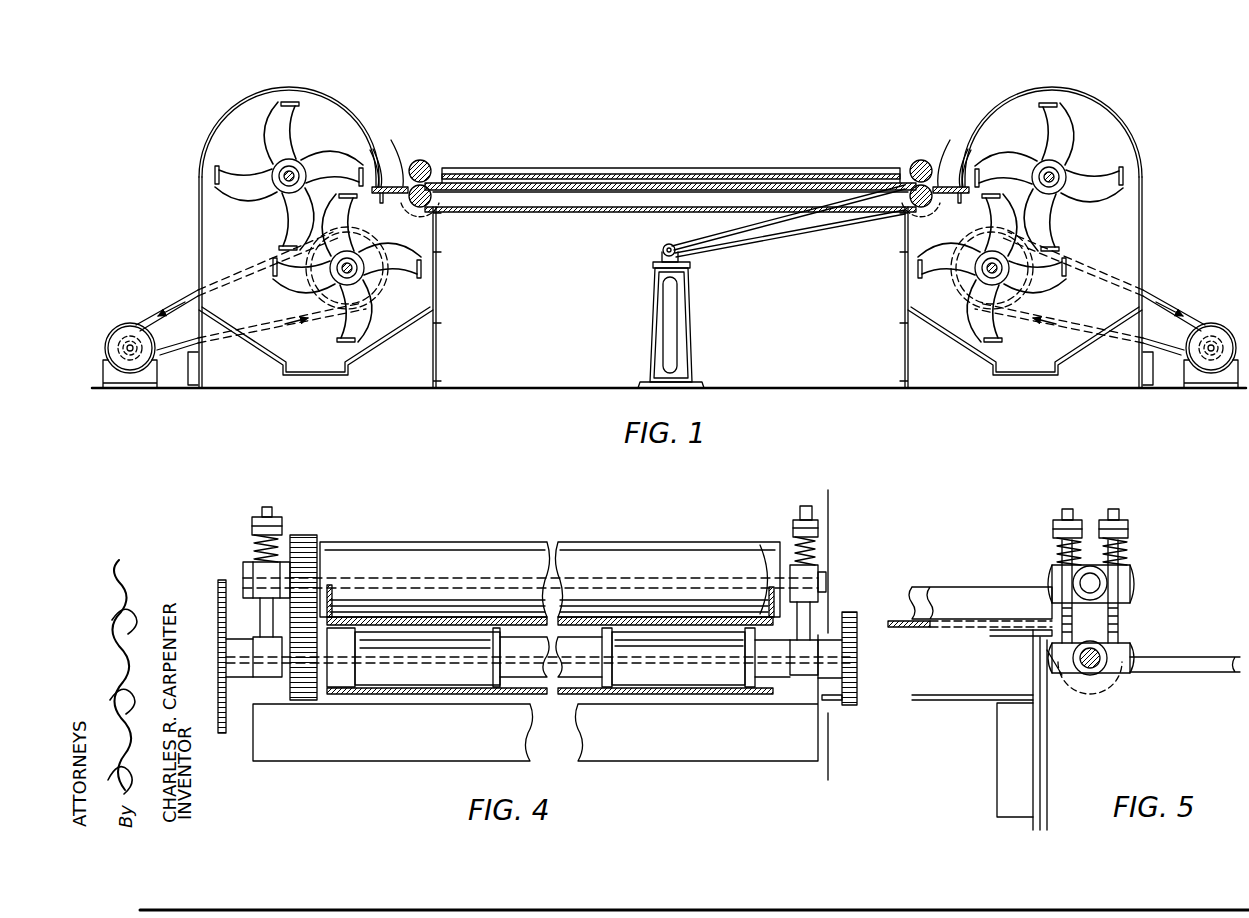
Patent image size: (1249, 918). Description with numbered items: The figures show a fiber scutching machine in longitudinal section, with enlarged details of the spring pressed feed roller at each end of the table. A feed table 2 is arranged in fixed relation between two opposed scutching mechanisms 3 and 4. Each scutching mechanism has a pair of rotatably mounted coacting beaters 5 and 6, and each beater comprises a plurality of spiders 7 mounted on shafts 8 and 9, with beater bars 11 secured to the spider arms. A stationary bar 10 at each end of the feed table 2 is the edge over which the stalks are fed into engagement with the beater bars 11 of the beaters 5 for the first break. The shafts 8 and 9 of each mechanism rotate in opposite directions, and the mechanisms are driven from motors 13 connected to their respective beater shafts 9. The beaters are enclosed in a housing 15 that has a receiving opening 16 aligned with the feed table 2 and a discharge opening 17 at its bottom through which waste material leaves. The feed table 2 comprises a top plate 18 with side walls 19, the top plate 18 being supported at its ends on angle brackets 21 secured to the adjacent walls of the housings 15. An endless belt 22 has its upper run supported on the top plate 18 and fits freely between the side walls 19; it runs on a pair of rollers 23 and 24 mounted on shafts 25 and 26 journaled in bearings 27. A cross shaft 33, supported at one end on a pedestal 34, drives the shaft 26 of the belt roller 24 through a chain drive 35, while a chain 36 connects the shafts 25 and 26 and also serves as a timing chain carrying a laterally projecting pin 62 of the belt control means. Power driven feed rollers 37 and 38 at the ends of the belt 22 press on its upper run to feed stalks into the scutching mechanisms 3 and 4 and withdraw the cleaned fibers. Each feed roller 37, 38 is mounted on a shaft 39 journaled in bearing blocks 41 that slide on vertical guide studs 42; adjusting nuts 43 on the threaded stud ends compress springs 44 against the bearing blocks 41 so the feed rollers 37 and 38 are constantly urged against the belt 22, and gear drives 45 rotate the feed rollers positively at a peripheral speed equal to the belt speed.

In FIG. 1, the feed table 2 is at (540, 166).
In FIG. 4, the feed table 2 is at (490, 603).
In FIG. 1, the scutching mechanism 3 is at (212, 125).
In FIG. 1, the scutching mechanism 4 is at (1127, 113).
In FIG. 1, the beater 5 is at (263, 156).
In FIG. 4, the beater 5 is at (862, 500).
In FIG. 1, the beater 6 is at (390, 286).
In FIG. 1, the spider 7 is at (278, 136).
In FIG. 1, the shaft 8 is at (285, 182).
In FIG. 1, the shaft 9 is at (344, 272).
In FIG. 1, the stationary bar 10 is at (400, 186).
In FIG. 1, the beater bar 11 is at (293, 100).
In FIG. 1, the motor 13 is at (128, 325).
In FIG. 1, the housing 15 is at (199, 228).
In FIG. 1, the receiving opening 16 is at (377, 170).
In FIG. 1, the discharge opening 17 is at (328, 378).
In FIG. 1, the top plate 18 is at (612, 194).
In FIG. 4, the top plate 18 is at (530, 625).
In FIG. 5, the top plate 18 is at (955, 633).
In FIG. 1, the side wall 19 is at (592, 168).
In FIG. 4, the side wall 19 is at (333, 590).
In FIG. 5, the side wall 19 is at (930, 587).
In FIG. 4, the angle bracket 21 is at (430, 632).
In FIG. 5, the angle bracket 21 is at (1010, 637).
In FIG. 1, the endless belt 22 is at (550, 213).
In FIG. 4, the endless belt 22 is at (600, 622).
In FIG. 5, the endless belt 22 is at (900, 630).
In FIG. 1, the roller 23 is at (419, 208).
In FIG. 1, the roller 24 is at (920, 218).
In FIG. 4, the roller 24 is at (550, 686).
In FIG. 5, the roller 24 is at (1120, 683).
In FIG. 1, the shaft 25 is at (403, 200).
In FIG. 1, the shaft 26 is at (935, 200).
In FIG. 4, the shaft 26 is at (660, 665).
In FIG. 5, the shaft 26 is at (1085, 665).
In FIG. 4, the bearing 27 is at (265, 643).
In FIG. 5, the bearing 27 is at (1092, 675).
In FIG. 1, the cross shaft 33 is at (662, 250).
In FIG. 1, the pedestal 34 is at (654, 305).
In FIG. 1, the chain drive 35 is at (765, 244).
In FIG. 4, the chain 36 is at (858, 700).
In FIG. 1, the feed roller 37 is at (428, 164).
In FIG. 1, the feed roller 38 is at (921, 160).
In FIG. 4, the feed roller 38 is at (688, 545).
In FIG. 5, the feed roller 38 is at (1090, 560).
In FIG. 1, the shaft 39 is at (912, 168).
In FIG. 4, the shaft 39 is at (828, 578).
In FIG. 5, the shaft 39 is at (1110, 580).
In FIG. 4, the bearing block 41 is at (255, 580).
In FIG. 5, the bearing block 41 is at (1131, 586).
In FIG. 4, the guide stud 42 is at (266, 506).
In FIG. 5, the guide stud 42 is at (1062, 615).
In FIG. 4, the adjusting nut 43 is at (258, 517).
In FIG. 5, the adjusting nut 43 is at (1058, 520).
In FIG. 4, the spring 44 is at (252, 545).
In FIG. 5, the spring 44 is at (1055, 548).
In FIG. 4, the gear drive 45 is at (306, 533).
In FIG. 4, the laterally projecting pin 62 is at (835, 702).